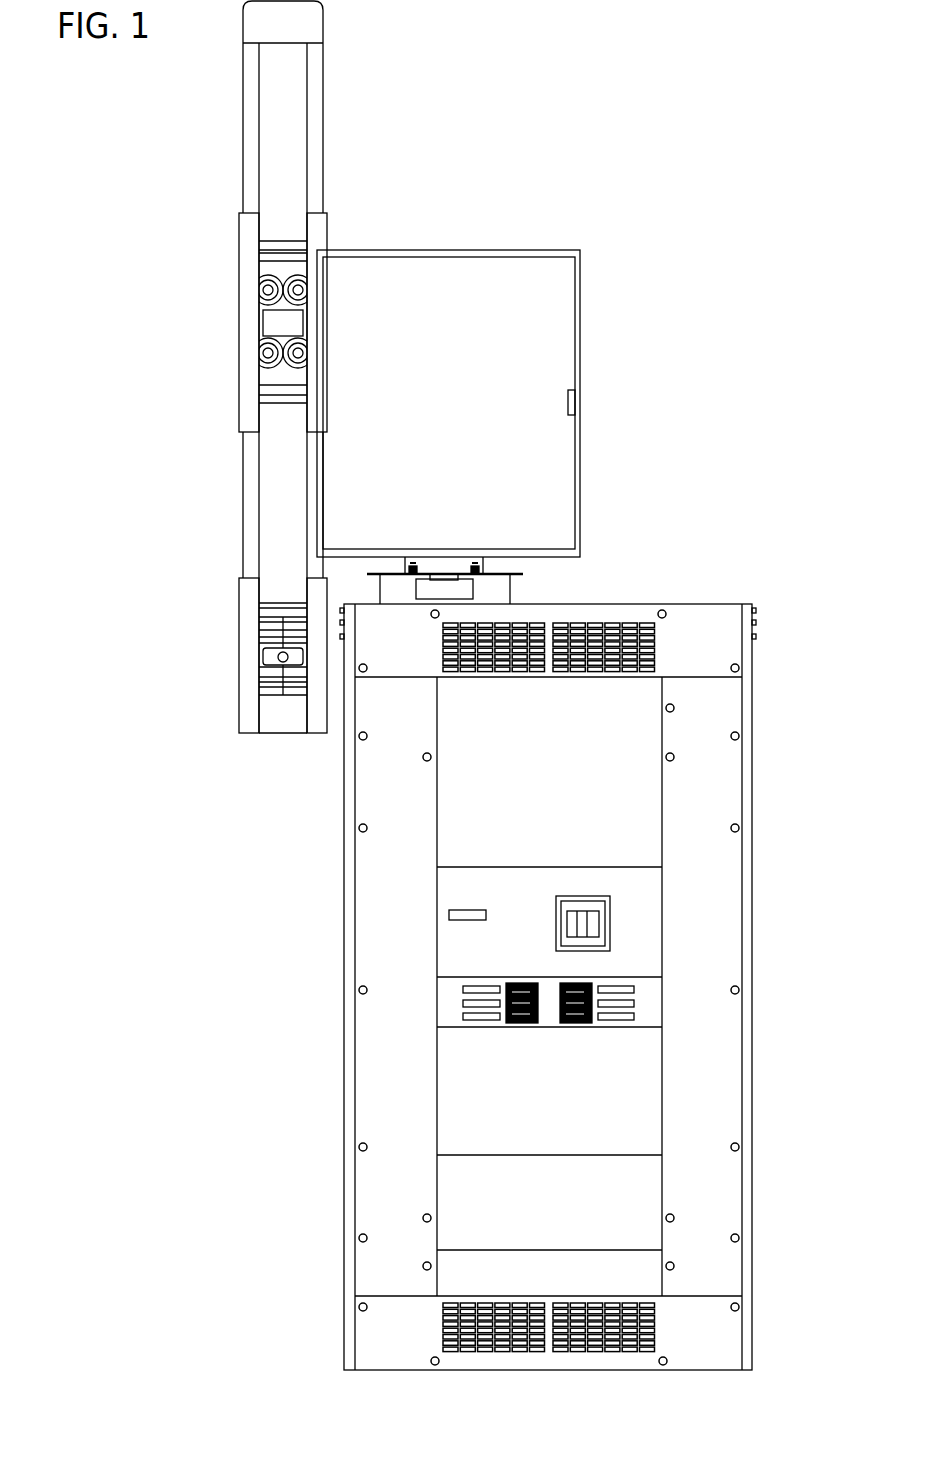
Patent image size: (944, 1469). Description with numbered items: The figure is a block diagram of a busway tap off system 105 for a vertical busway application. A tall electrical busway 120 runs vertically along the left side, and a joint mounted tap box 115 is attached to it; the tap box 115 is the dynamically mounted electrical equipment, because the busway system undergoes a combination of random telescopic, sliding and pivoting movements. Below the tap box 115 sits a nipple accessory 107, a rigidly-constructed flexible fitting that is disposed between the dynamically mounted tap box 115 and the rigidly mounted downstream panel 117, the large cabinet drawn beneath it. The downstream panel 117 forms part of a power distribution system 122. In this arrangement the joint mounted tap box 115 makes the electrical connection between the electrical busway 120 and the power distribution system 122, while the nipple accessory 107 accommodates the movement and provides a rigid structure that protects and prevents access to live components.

The busway tap off system 105 is at (542, 118).
The nipple accessory 107 is at (498, 592).
The joint mounted tap box 115 is at (538, 333).
The downstream panel 117 is at (710, 726).
The electrical busway 120 is at (315, 117).
The power distribution system 122 is at (757, 799).